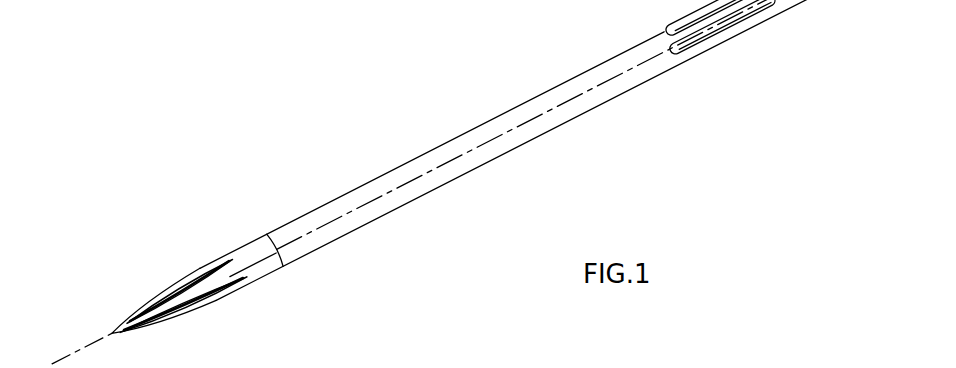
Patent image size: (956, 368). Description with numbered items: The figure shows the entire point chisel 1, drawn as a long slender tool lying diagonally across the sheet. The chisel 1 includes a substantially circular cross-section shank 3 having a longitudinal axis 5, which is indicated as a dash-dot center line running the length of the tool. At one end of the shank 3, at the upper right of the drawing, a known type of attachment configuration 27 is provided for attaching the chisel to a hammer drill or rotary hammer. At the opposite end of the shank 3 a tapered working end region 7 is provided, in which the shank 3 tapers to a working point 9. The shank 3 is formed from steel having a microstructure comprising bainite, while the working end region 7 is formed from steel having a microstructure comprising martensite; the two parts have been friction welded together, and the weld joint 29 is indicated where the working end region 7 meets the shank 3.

The point chisel 1 is at (448, 184).
The shank 3 is at (507, 143).
The longitudinal axis 5 is at (758, 61).
The tapered working end region 7 is at (161, 298).
The working point 9 is at (104, 333).
The attachment configuration 27 is at (728, 55).
The weld joint 29 is at (280, 257).